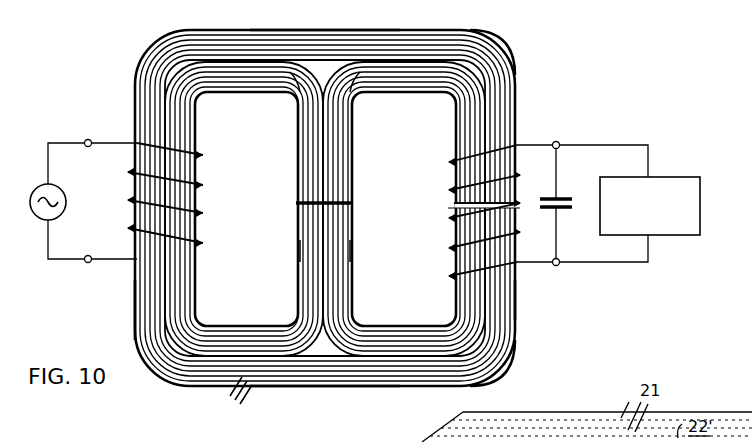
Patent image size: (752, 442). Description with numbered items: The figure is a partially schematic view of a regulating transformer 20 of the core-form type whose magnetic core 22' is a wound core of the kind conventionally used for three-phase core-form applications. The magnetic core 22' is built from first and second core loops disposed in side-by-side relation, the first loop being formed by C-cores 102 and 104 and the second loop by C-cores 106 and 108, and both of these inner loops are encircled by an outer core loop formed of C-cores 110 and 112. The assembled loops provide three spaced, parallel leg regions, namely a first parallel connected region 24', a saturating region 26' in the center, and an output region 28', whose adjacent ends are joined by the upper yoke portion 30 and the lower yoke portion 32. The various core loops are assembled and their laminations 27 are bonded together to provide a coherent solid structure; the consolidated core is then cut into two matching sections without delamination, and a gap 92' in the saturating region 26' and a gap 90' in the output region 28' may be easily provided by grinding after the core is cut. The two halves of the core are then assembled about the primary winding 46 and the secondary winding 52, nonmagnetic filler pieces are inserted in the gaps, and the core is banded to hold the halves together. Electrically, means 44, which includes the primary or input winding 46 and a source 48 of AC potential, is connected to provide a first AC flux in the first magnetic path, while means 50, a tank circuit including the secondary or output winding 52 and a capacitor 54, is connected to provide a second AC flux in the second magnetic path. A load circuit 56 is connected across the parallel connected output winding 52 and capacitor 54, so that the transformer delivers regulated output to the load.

The regulating transformer 20 is at (126, 56).
The upper yoke portion 30 is at (332, 50).
The lower yoke portion 32 is at (320, 368).
The laminations 27 is at (245, 370).
The C-core 110 is at (492, 58).
The C-core 112 is at (490, 340).
The magnetic core 22' is at (119, 310).
The output region 28' is at (533, 300).
The first parallel connected region 24' is at (244, 209).
The saturating region 26' is at (404, 209).
The C-core 102 is at (302, 104).
The C-core 106 is at (345, 106).
The C-core 104 is at (302, 251).
The C-core 108 is at (346, 251).
The gap 92' is at (307, 202).
The gap 90' is at (472, 202).
The primary winding 46 is at (200, 157).
The secondary winding 52 is at (472, 160).
The means for providing first AC flux 44 is at (104, 214).
The source of AC potential 48 is at (40, 188).
The means for providing second AC flux 50 is at (554, 184).
The capacitor 54 is at (564, 199).
The load circuit 56 is at (658, 176).